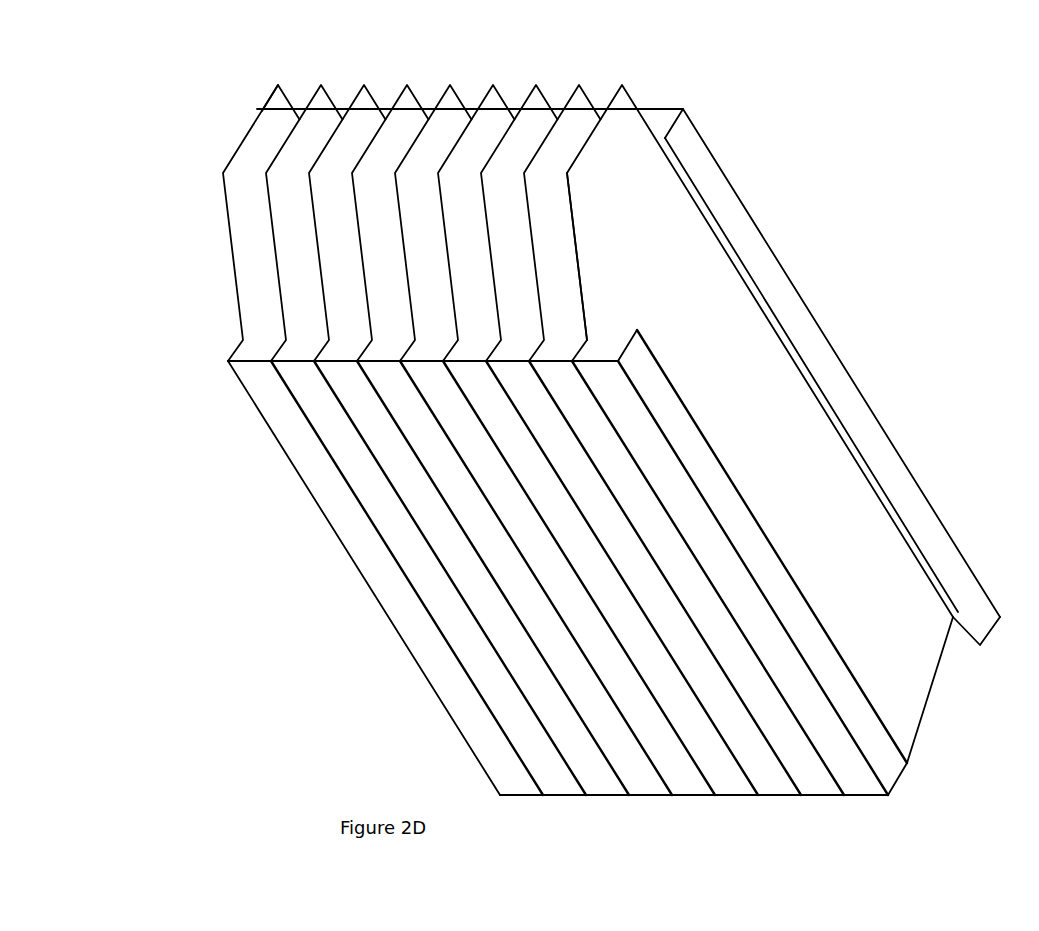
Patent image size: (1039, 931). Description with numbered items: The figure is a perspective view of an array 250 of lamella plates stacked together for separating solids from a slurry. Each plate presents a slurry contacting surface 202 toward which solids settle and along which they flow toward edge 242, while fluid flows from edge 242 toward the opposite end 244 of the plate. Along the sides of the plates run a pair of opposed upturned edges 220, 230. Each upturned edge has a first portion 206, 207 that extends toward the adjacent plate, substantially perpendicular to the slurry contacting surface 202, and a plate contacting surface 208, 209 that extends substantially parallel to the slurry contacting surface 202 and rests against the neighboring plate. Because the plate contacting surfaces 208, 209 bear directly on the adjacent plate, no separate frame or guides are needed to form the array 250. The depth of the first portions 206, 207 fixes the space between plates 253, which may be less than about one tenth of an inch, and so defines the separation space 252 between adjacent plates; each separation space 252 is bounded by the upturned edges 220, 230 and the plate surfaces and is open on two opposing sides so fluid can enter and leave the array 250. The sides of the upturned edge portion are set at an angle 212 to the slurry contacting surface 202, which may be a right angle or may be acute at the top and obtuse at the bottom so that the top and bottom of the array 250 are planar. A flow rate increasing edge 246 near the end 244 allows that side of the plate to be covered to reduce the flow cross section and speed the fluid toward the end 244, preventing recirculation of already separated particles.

The slurry contacting surface 202 is at (607, 452).
The first portion 206 is at (655, 106).
The first portion 207 is at (856, 797).
The plate contacting surface 208 is at (896, 780).
The plate contacting surface 209 is at (700, 128).
The angle 212 is at (258, 368).
The upturned edge 220 is at (902, 757).
The upturned edge 230 is at (667, 102).
The edge 242 is at (941, 650).
The end 244 is at (613, 105).
The flow rate increasing edge 246 is at (581, 250).
The array of lamella plates 250 is at (538, 409).
The separation space 252 is at (212, 203).
The space between plates 253 is at (256, 117).